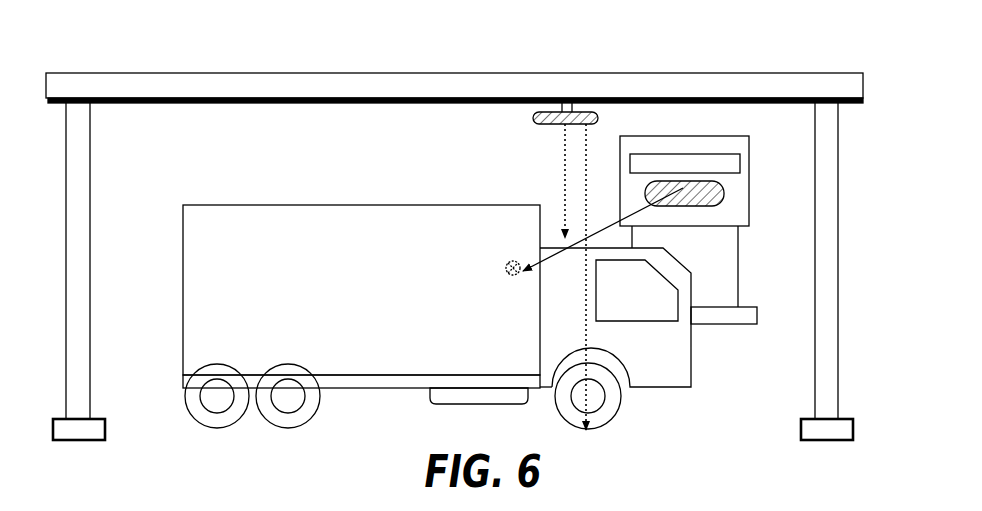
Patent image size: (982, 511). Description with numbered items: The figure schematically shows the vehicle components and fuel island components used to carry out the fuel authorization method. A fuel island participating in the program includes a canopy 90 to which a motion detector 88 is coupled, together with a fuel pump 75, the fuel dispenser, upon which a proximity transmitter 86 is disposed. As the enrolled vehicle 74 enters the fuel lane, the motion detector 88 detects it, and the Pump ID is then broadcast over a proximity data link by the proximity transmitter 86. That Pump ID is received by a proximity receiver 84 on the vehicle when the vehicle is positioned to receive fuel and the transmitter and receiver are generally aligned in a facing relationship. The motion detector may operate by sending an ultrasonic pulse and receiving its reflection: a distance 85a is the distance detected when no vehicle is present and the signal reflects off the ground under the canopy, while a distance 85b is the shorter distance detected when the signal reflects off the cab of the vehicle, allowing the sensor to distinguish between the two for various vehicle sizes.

The enrolled vehicle 74 is at (343, 205).
The fuel pump 75 is at (748, 172).
The proximity receiver 84 is at (513, 275).
The distance 85a is at (583, 142).
The distance 85b is at (565, 150).
The proximity transmitter 86 is at (724, 198).
The motion detector 88 is at (546, 112).
The canopy 90 is at (308, 103).